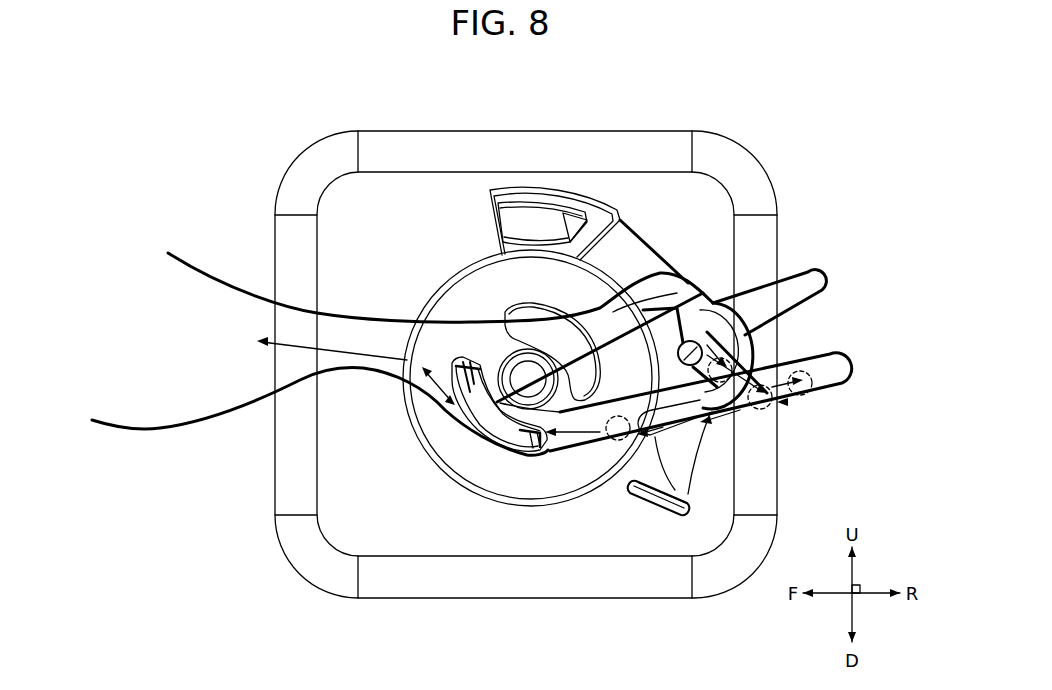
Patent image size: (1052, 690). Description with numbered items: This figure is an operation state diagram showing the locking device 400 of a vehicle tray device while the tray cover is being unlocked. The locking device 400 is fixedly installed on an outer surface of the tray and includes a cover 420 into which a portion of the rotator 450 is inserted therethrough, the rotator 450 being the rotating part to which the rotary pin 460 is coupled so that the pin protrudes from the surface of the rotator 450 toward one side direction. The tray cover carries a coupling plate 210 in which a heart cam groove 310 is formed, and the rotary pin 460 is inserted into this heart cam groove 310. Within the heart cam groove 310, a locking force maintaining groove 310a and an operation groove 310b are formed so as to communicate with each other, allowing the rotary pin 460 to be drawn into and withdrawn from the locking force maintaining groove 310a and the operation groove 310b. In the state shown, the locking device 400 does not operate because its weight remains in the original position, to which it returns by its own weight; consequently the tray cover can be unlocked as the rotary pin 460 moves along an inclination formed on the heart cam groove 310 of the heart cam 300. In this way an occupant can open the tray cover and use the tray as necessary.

The locking device 400 is at (790, 146).
The cover 420 is at (420, 207).
The rotator 450 is at (527, 482).
The coupling plate 210 is at (250, 432).
The heart cam 300 is at (733, 443).
The heart cam groove 310 is at (605, 315).
The locking force maintaining groove 310a is at (815, 290).
The operation groove 310b is at (848, 388).
The rotary pin 460 is at (775, 332).